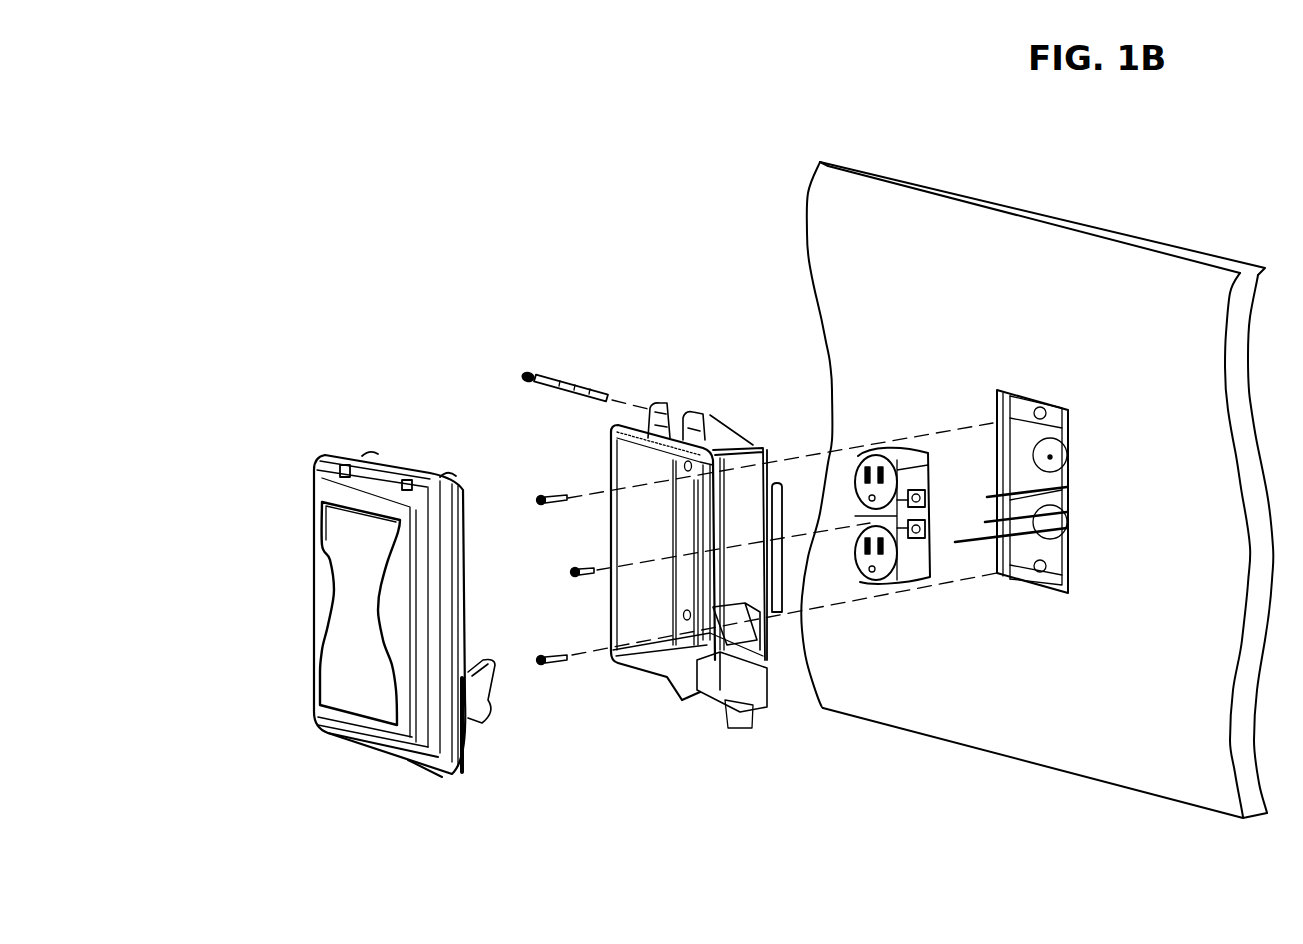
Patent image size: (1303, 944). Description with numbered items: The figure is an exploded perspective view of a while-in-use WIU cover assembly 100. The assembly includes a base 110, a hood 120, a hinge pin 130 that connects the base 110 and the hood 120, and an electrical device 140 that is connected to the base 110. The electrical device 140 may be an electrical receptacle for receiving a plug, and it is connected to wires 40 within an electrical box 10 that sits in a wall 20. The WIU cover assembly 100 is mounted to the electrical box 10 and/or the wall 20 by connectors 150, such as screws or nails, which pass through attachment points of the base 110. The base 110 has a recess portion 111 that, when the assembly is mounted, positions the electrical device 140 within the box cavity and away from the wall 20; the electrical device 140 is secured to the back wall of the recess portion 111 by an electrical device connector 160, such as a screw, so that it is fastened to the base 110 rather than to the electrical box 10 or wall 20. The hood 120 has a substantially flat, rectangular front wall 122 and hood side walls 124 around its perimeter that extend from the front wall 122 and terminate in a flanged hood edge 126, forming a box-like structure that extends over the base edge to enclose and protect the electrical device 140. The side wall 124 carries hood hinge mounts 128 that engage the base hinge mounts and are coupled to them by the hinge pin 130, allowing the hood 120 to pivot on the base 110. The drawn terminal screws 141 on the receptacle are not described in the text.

The WIU cover assembly 100 is at (312, 250).
The hood 120 is at (320, 415).
The front wall 122 is at (352, 640).
The hood side walls 124 is at (402, 458).
The hood edge 126 is at (543, 478).
The hood hinge mounts 128 is at (365, 450).
The base 110 is at (600, 440).
The recess portion 111 is at (773, 478).
The hinge pin 130 is at (581, 378).
The connectors 150 is at (545, 508).
The electrical device connector 160 is at (580, 580).
The electrical device 140 is at (893, 437).
The terminal screws 141 is at (939, 548).
The wires 40 is at (978, 503).
The electrical box 10 is at (1088, 485).
The wall 20 is at (1136, 337).